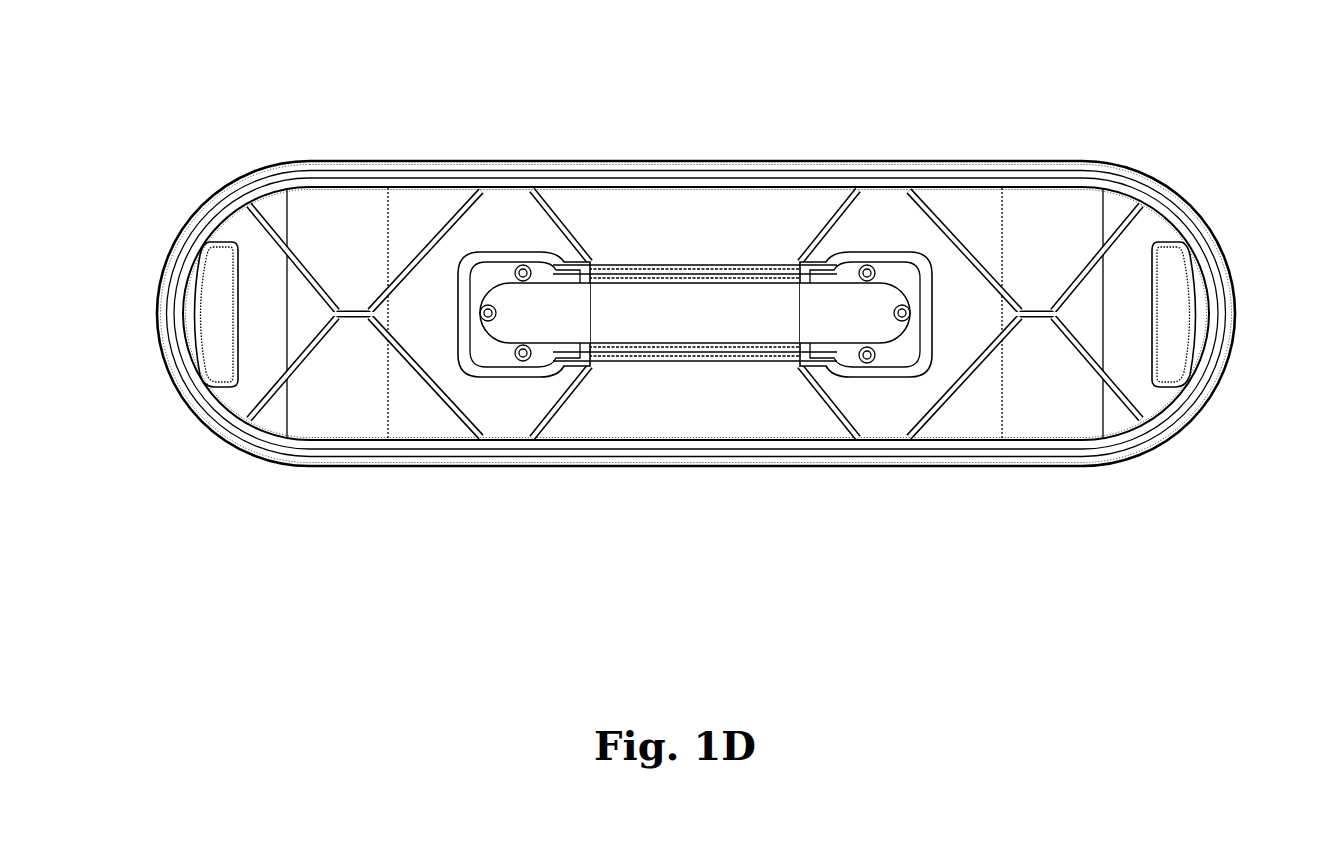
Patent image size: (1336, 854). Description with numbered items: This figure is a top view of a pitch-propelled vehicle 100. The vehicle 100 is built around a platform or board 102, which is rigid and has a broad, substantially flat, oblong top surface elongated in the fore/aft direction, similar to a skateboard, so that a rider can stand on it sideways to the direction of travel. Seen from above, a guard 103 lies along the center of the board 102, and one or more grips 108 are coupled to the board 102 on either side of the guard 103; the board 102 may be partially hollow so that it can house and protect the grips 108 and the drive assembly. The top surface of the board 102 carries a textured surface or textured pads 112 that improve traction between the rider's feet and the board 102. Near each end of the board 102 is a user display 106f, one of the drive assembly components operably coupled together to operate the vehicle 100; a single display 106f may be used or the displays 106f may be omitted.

The pitch-propelled vehicle 100 is at (1137, 70).
The board 102 is at (767, 450).
The guard 103 is at (740, 310).
The user display 106f is at (212, 350).
The grip 108 is at (497, 273).
The textured surface 112 is at (346, 278).